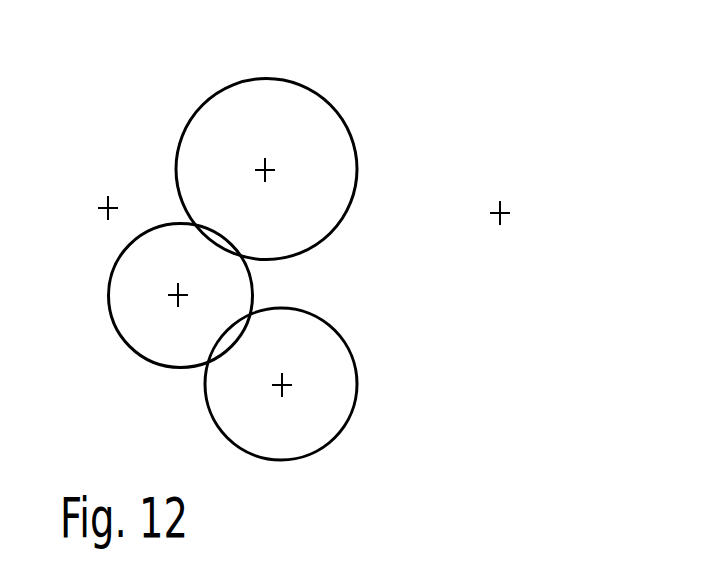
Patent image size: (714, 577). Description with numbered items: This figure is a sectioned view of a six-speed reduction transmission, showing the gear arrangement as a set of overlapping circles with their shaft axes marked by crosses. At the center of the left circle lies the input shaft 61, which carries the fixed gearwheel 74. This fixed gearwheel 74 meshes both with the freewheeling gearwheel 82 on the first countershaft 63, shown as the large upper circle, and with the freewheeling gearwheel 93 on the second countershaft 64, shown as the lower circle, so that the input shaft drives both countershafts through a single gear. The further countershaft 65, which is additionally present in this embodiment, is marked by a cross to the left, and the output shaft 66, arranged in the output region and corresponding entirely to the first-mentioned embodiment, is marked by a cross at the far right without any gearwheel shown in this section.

The freewheeling gearwheel 82 is at (275, 90).
The first countershaft 63 is at (273, 163).
The fixed gearwheel 74 is at (123, 283).
The input shaft 61 is at (177, 290).
The freewheeling gearwheel 93 is at (325, 430).
The second countershaft 64 is at (287, 383).
The further countershaft 65 is at (110, 205).
The output shaft 66 is at (502, 212).